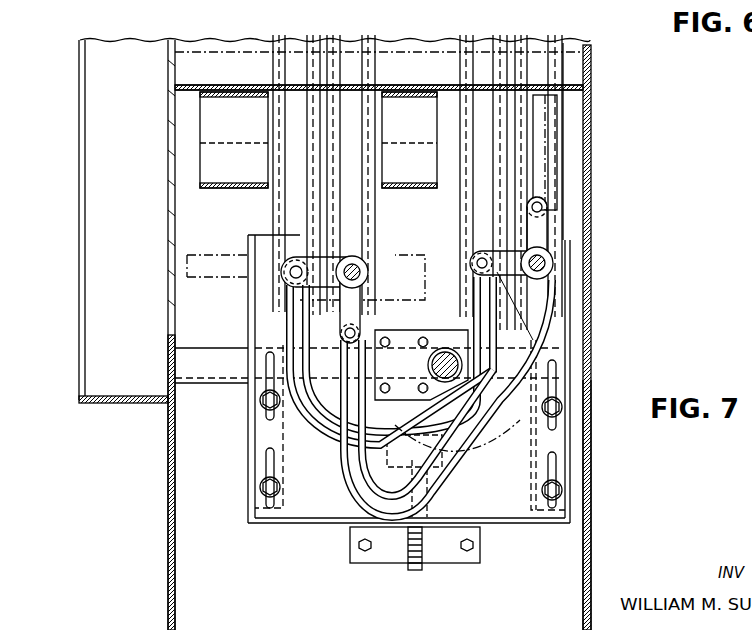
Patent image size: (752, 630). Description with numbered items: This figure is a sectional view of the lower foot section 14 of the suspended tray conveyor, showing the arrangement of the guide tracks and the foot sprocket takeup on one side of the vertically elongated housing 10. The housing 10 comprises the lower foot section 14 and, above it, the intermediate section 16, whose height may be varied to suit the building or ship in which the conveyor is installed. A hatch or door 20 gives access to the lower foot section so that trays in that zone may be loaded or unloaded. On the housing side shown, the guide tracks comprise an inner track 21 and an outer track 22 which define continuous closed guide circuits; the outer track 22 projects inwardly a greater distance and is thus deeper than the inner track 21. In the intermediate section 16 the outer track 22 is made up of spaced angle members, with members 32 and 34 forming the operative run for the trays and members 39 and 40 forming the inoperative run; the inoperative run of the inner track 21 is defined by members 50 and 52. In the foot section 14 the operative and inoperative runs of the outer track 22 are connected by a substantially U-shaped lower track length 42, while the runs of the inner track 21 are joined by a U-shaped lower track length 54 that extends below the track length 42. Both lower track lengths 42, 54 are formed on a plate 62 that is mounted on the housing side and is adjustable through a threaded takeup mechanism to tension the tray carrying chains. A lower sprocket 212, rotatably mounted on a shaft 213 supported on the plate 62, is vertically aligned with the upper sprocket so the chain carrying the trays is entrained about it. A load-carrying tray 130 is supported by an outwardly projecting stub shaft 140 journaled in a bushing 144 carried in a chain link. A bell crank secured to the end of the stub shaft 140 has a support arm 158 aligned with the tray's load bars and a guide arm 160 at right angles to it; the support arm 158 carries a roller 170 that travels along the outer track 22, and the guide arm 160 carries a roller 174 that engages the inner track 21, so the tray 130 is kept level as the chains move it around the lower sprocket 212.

The housing 10 is at (670, 159).
The lower foot section 14 is at (592, 500).
The intermediate section 16 is at (592, 142).
The hatch or door 20 is at (79, 398).
The inner track 21 is at (356, 46).
The outer track 22 is at (291, 68).
The angle member 32 is at (278, 35).
The angle member 34 is at (318, 35).
The angle member 39 is at (520, 36).
The angle member 40 is at (555, 36).
The lower track length 42 is at (321, 429).
The member 50 is at (468, 35).
The member 52 is at (500, 37).
The lower track length 54 is at (450, 500).
The plate 62 is at (262, 324).
The load-carrying tray 130 is at (218, 262).
The stub shaft 140 is at (360, 260).
The bushing 144 is at (362, 270).
The support arm 158 is at (320, 268).
The guide arm 160 is at (497, 258).
The roller 170 is at (282, 280).
The roller 174 is at (345, 333).
The lower sprocket 212 is at (522, 414).
The shaft 213 is at (432, 365).